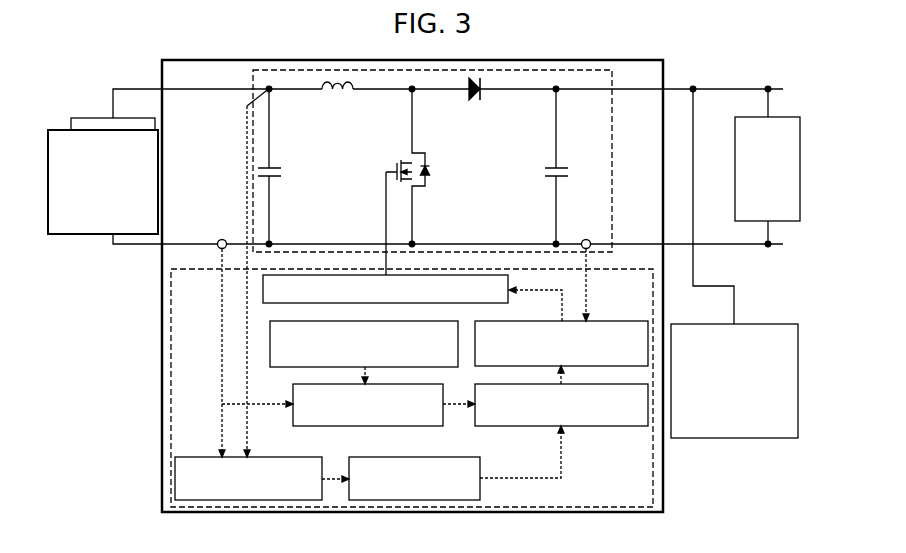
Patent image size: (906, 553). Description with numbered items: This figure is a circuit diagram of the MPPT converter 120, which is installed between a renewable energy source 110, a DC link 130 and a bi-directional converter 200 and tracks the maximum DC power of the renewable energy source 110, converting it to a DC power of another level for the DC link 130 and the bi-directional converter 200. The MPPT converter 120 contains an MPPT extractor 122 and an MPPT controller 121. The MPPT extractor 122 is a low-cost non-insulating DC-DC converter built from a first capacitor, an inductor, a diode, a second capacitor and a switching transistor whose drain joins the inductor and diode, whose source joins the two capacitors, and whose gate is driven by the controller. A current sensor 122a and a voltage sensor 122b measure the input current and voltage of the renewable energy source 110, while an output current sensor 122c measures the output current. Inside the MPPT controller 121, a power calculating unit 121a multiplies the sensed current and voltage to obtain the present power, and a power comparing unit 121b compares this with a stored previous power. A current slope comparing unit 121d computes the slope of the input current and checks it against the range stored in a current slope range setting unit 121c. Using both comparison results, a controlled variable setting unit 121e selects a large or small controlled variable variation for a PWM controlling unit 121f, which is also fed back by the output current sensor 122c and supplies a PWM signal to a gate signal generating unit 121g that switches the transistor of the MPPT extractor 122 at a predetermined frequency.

The renewable energy source 110 is at (86, 117).
The MPPT converter 120 is at (573, 58).
The MPPT controller 121 is at (506, 513).
The power calculating unit 121a is at (248, 501).
The power comparing unit 121b is at (413, 501).
The current slope range setting unit 121c is at (270, 342).
The current slope comparing unit 121d is at (293, 391).
The controlled variable setting unit 121e is at (593, 428).
The PWM controlling unit 121f is at (604, 320).
The gate signal generating unit 121g is at (509, 279).
The MPPT extractor 122 is at (415, 67).
The current sensor 122a is at (222, 239).
The voltage sensor 122b is at (272, 91).
The output current sensor 122c is at (587, 239).
The DC link 130 is at (735, 171).
The bi-directional converter 200 is at (733, 439).